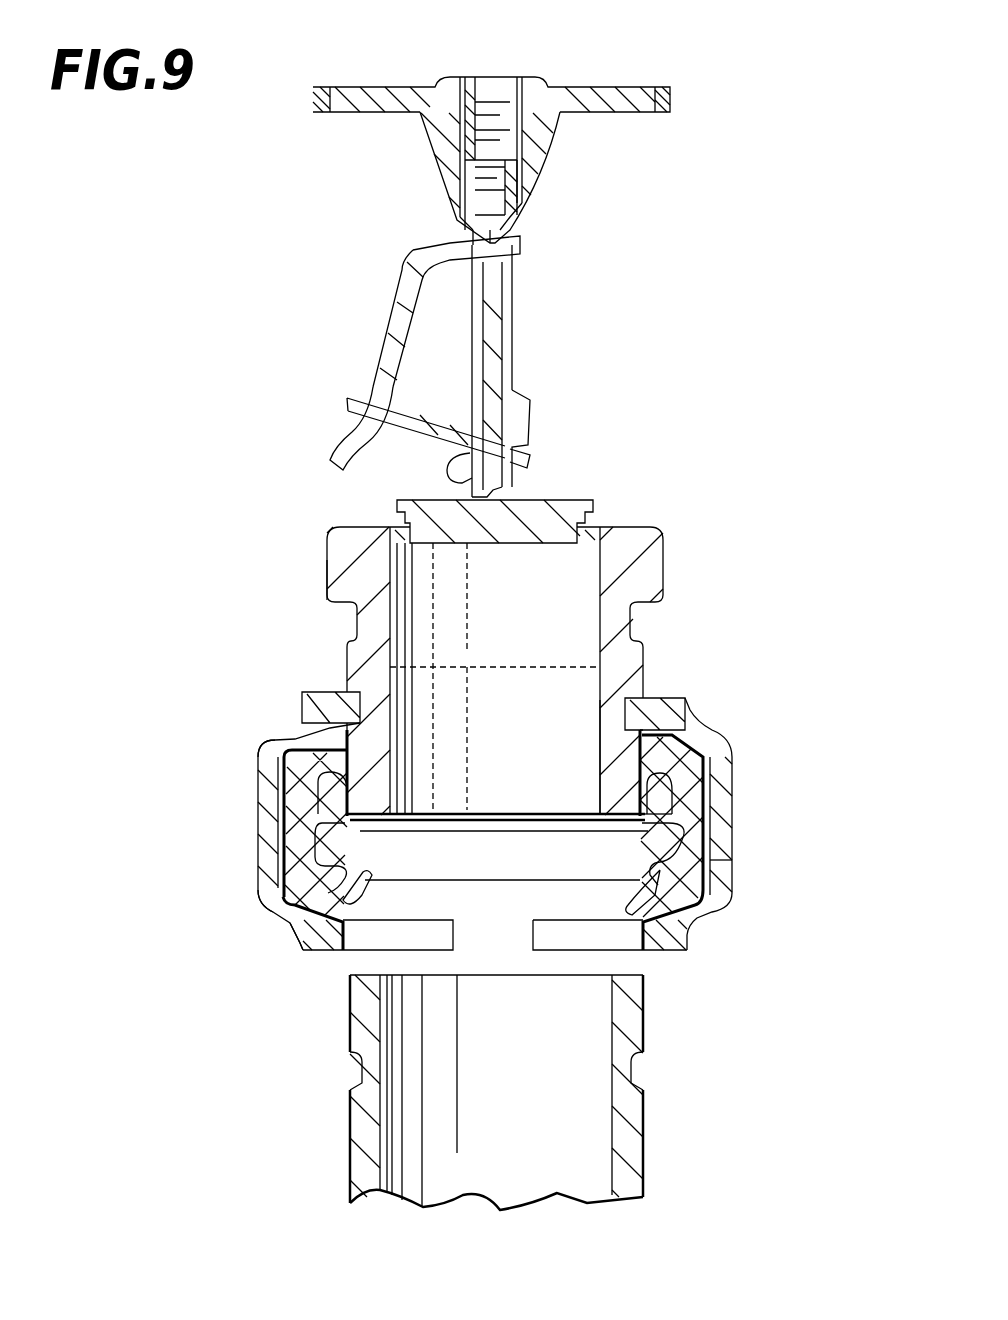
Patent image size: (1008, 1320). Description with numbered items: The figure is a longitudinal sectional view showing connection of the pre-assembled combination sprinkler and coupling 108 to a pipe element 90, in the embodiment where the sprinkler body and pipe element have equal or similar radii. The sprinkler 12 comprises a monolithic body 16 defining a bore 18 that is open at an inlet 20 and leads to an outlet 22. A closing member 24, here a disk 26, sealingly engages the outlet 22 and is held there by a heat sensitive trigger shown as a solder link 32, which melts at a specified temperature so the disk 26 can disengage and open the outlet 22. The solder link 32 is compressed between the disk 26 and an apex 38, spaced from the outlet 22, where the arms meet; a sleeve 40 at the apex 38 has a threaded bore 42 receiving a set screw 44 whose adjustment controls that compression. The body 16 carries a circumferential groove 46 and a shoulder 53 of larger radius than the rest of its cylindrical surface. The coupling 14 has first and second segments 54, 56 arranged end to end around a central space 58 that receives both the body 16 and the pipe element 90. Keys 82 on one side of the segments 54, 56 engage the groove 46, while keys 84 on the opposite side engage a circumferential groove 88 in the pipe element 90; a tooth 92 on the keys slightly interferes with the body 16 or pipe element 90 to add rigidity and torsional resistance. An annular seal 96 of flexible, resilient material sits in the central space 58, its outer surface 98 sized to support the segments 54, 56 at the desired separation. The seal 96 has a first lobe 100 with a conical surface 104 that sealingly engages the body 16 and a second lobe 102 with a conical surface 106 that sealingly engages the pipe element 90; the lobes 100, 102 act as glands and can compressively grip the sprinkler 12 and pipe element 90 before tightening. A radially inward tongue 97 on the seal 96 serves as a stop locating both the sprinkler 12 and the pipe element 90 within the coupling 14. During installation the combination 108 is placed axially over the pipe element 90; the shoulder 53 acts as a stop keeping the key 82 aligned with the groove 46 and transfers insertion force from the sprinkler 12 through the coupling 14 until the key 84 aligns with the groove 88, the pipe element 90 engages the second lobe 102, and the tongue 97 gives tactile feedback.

The sprinkler 12 is at (635, 513).
The coupling 14 is at (522, 836).
The body 16 is at (610, 770).
The bore 18 is at (578, 707).
The inlet 20 is at (450, 805).
The outlet 22 is at (523, 543).
The closing member 24 is at (544, 465).
The disk 26 is at (532, 503).
The solder link 32 is at (515, 392).
The apex 38 is at (483, 160).
The sleeve 40 is at (440, 163).
The threaded bore 42 is at (498, 95).
The set screw 44 is at (475, 203).
The groove 46 is at (347, 717).
The shoulder 53 is at (340, 650).
The first segment 54 is at (258, 820).
The second segment 56 is at (727, 740).
The central space 58 is at (553, 835).
The keys 82 is at (657, 698).
The keys 84 is at (647, 950).
The circumferential groove 88 is at (642, 1055).
The pipe element 90 is at (633, 1138).
The tooth 92 is at (300, 935).
The annular seal 96 is at (657, 823).
The tongue 97 is at (297, 777).
The outer surface 98 is at (730, 872).
The first lobe 100 is at (690, 772).
The second lobe 102 is at (290, 890).
The conical surface 104 is at (273, 738).
The conical surface 106 is at (467, 940).
The combination sprinkler and coupling 108 is at (770, 312).